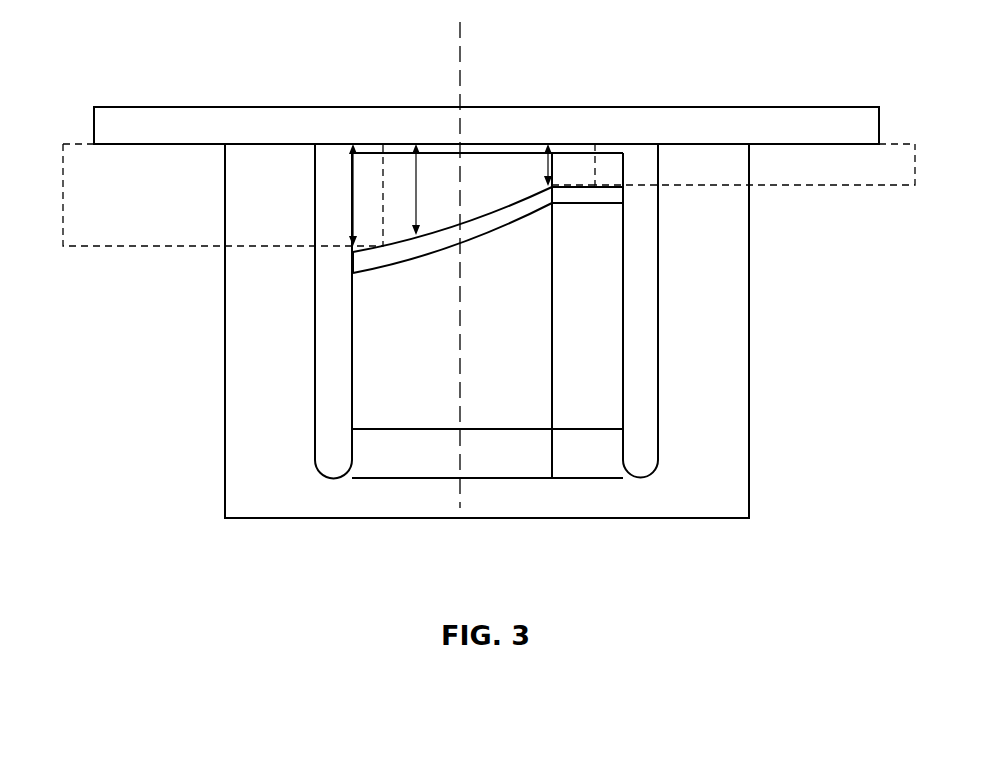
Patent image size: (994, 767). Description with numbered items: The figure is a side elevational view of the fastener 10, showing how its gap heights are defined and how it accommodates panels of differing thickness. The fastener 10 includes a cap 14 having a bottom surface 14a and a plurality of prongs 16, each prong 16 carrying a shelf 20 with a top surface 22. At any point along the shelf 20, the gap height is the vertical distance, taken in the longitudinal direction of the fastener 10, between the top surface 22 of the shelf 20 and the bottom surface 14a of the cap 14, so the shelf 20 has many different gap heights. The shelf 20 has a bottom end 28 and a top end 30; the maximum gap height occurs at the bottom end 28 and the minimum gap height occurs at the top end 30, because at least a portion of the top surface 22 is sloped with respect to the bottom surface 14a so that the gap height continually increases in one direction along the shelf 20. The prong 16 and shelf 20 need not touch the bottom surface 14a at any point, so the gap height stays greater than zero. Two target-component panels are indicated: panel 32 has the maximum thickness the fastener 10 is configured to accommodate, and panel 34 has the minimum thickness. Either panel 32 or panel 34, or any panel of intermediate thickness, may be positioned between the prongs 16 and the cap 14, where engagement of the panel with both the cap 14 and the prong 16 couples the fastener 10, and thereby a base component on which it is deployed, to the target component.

The fastener 10 is at (108, 52).
The cap 14 is at (360, 118).
The bottom surface 14a is at (486, 99).
The prong 16 is at (527, 297).
The shelf 20 is at (505, 225).
The top surface 22 is at (503, 207).
The bottom end 28 is at (352, 262).
The top end 30 is at (625, 200).
The panel 32 is at (73, 247).
The panel 34 is at (880, 186).